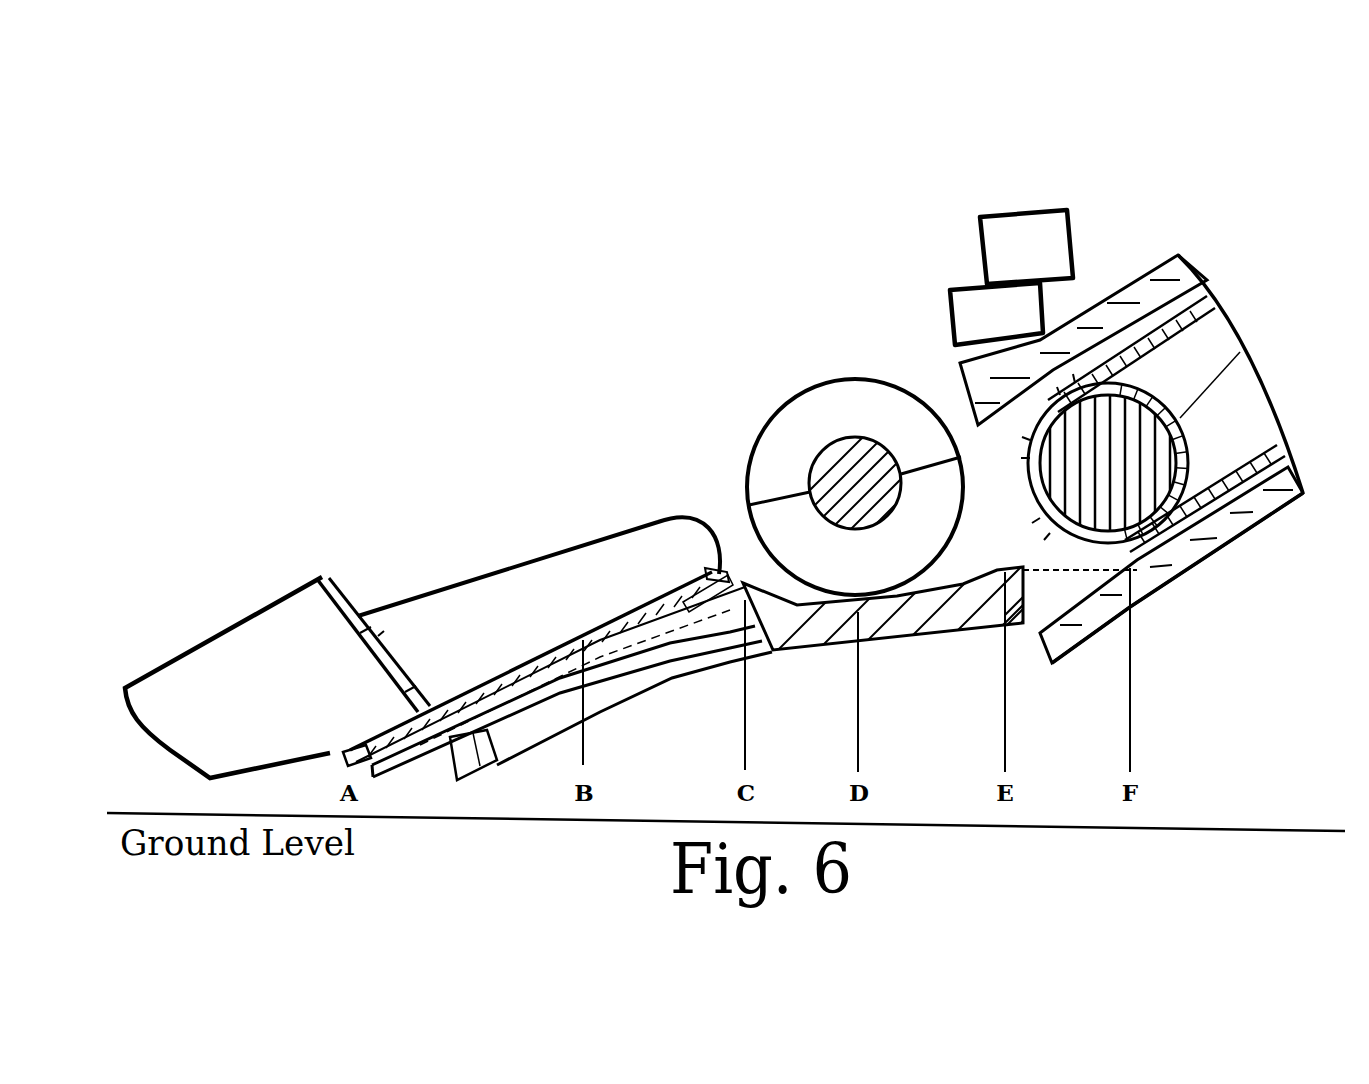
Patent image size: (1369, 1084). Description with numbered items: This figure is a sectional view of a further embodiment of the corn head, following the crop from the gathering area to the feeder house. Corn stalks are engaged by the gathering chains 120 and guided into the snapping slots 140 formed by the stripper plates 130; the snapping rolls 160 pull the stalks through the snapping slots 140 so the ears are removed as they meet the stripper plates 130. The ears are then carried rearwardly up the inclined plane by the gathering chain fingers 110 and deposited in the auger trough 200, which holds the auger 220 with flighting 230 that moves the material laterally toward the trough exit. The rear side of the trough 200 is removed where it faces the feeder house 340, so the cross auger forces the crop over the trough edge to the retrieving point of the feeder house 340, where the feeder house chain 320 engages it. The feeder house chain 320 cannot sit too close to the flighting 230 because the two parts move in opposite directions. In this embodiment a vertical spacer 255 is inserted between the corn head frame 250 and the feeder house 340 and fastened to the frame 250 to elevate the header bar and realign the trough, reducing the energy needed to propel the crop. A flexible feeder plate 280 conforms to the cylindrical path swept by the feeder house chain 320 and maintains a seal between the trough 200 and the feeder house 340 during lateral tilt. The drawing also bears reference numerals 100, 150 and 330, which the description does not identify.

The bucket 100 is at (253, 680).
The gathering chain fingers 110 is at (352, 748).
The gathering chains 120 is at (433, 705).
The stripper plates 130 is at (493, 690).
The snapping slots 140 is at (569, 612).
The hood 150 is at (635, 565).
The snapping rolls 160 is at (672, 650).
The auger trough 200 is at (775, 505).
The auger 220 is at (853, 465).
The flighting 230 is at (905, 437).
The corn head frame 250 is at (1040, 257).
The vertical spacer 255 is at (968, 318).
The flexible feeder plate 280 is at (1073, 572).
The feeder house chain 320 is at (1147, 340).
The belt 330 is at (1172, 357).
The feeder house 340 is at (1265, 487).